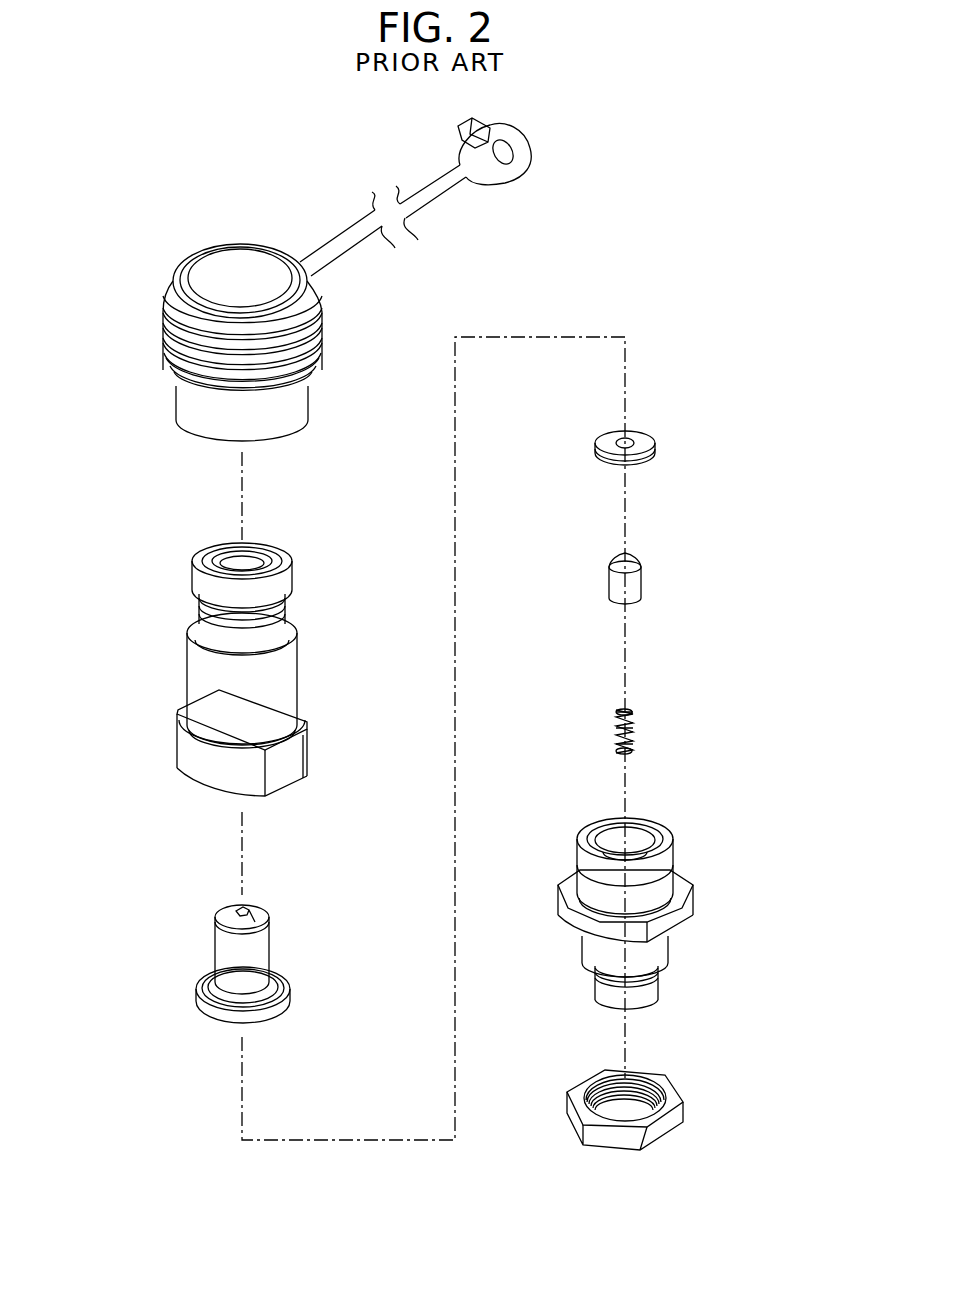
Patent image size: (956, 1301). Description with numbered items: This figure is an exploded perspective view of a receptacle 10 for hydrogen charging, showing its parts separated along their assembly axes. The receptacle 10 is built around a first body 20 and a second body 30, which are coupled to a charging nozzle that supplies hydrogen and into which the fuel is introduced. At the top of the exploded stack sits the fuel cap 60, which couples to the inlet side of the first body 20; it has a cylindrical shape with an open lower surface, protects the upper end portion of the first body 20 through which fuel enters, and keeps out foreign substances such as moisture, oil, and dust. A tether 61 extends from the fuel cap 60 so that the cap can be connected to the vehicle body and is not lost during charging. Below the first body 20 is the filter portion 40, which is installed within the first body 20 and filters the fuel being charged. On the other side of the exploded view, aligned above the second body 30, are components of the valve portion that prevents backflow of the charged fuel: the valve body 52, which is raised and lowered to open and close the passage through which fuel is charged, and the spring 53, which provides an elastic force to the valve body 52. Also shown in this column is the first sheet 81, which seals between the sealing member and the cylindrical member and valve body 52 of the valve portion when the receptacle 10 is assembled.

The receptacle for hydrogen charging 10 is at (247, 184).
The first body 20 is at (184, 660).
The second body 30 is at (693, 897).
The filter portion 40 is at (212, 956).
The valve body 52 is at (640, 580).
The spring 53 is at (636, 721).
The fuel cap 60 is at (176, 392).
The tether 61 is at (430, 196).
The first sheet 81 is at (645, 440).